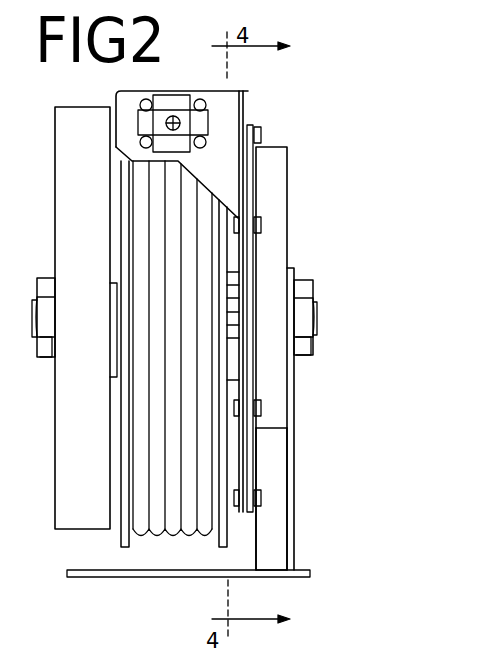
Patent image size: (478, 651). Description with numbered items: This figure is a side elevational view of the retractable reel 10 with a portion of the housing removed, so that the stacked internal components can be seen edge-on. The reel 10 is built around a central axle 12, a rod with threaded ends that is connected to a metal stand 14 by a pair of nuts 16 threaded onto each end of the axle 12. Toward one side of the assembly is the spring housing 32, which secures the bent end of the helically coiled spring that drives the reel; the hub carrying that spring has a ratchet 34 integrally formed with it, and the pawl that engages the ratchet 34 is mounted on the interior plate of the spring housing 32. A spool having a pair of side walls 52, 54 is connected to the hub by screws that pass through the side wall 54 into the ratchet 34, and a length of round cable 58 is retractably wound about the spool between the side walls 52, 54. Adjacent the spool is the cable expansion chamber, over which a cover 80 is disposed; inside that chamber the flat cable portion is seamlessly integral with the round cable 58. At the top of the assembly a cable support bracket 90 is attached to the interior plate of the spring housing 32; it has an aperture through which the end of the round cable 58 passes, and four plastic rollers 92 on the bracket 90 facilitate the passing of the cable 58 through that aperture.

The retractable reel 10 is at (184, 60).
The central axle 12 is at (33, 318).
The metal stand 14 is at (262, 470).
The nuts 16 is at (42, 357).
The spring housing 32 is at (272, 183).
The ratchet 34 is at (237, 315).
The side wall 52 is at (121, 541).
The side wall 54 is at (220, 540).
The round cable 58 is at (188, 522).
The cover 80 is at (72, 173).
The cable support bracket 90 is at (220, 122).
The plastic rollers 92 is at (142, 122).